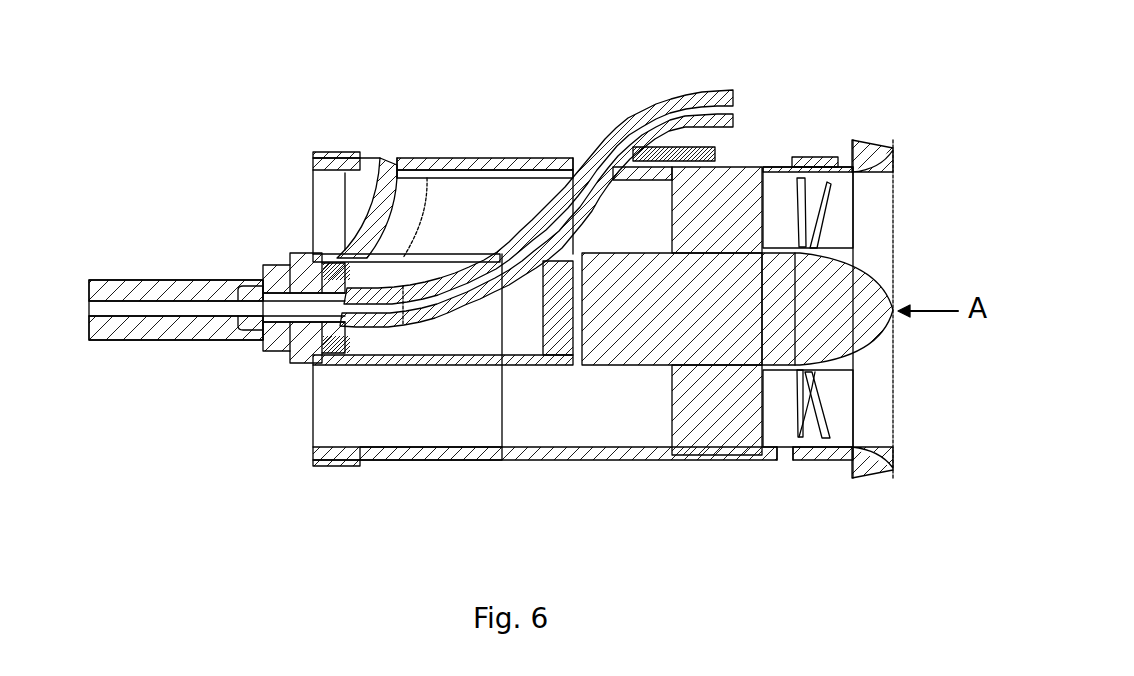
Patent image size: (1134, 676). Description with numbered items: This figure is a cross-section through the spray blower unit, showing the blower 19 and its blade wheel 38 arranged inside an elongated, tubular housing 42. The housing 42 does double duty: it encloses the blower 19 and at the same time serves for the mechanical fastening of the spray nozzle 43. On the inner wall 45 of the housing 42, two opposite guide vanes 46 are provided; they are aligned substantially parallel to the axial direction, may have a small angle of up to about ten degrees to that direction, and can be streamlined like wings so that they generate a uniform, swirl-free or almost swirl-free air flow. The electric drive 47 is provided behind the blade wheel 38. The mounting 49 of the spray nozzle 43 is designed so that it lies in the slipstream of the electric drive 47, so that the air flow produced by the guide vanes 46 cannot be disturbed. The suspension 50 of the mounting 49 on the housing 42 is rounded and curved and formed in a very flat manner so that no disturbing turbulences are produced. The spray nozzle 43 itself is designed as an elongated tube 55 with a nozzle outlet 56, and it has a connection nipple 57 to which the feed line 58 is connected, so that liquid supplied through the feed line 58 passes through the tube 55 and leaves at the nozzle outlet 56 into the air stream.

The blower 19 is at (767, 167).
The blade wheel 38 is at (813, 225).
The housing 42 is at (510, 450).
The spray nozzle 43 is at (160, 297).
The inner wall 45 is at (380, 448).
The guide vanes 46 is at (727, 193).
The electric drive 47 is at (647, 312).
The mounting 49 is at (382, 362).
The suspension 50 is at (388, 210).
The elongated tube 55 is at (200, 335).
The nozzle outlet 56 is at (86, 317).
The connection nipple 57 is at (363, 323).
The feed line 58 is at (603, 150).